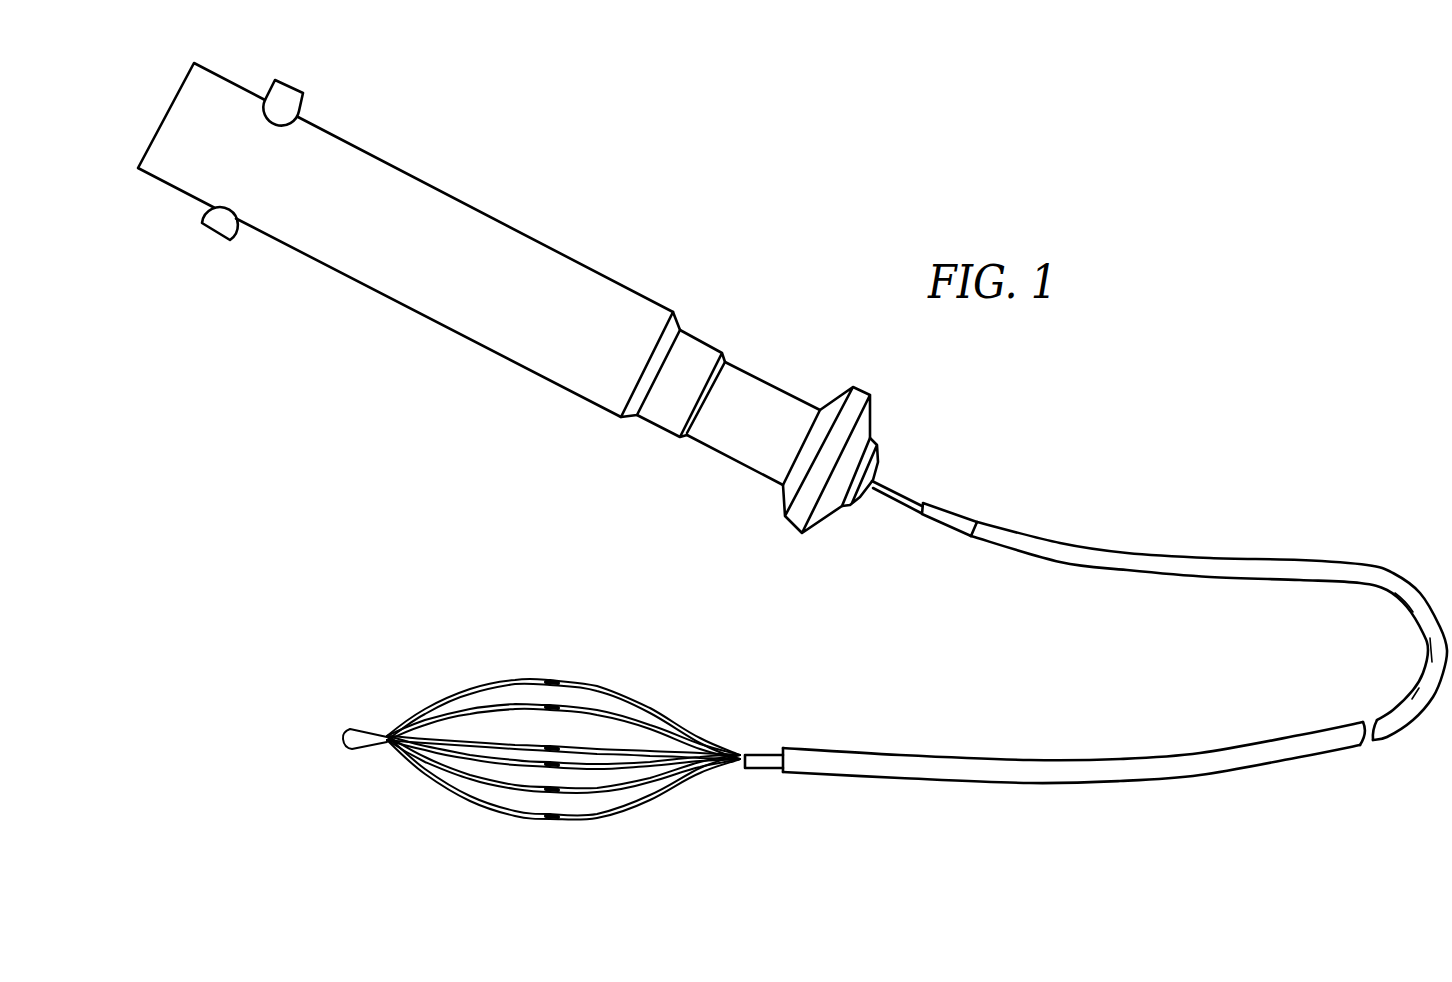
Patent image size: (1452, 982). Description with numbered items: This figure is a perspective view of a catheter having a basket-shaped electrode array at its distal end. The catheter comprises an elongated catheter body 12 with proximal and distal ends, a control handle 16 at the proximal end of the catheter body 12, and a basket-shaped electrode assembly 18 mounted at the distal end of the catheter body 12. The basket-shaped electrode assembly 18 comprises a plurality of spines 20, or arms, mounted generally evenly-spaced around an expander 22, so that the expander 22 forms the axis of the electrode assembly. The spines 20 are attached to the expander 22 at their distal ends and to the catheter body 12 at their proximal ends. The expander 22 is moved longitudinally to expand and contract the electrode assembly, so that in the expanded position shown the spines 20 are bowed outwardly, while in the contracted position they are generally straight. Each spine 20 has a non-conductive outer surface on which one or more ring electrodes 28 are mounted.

The catheter body 12 is at (1004, 768).
The control handle 16 is at (497, 234).
The basket-shaped electrode assembly 18 is at (541, 732).
The spine 20 is at (490, 712).
The expander 22 is at (630, 756).
The ring electrode 28 is at (548, 683).